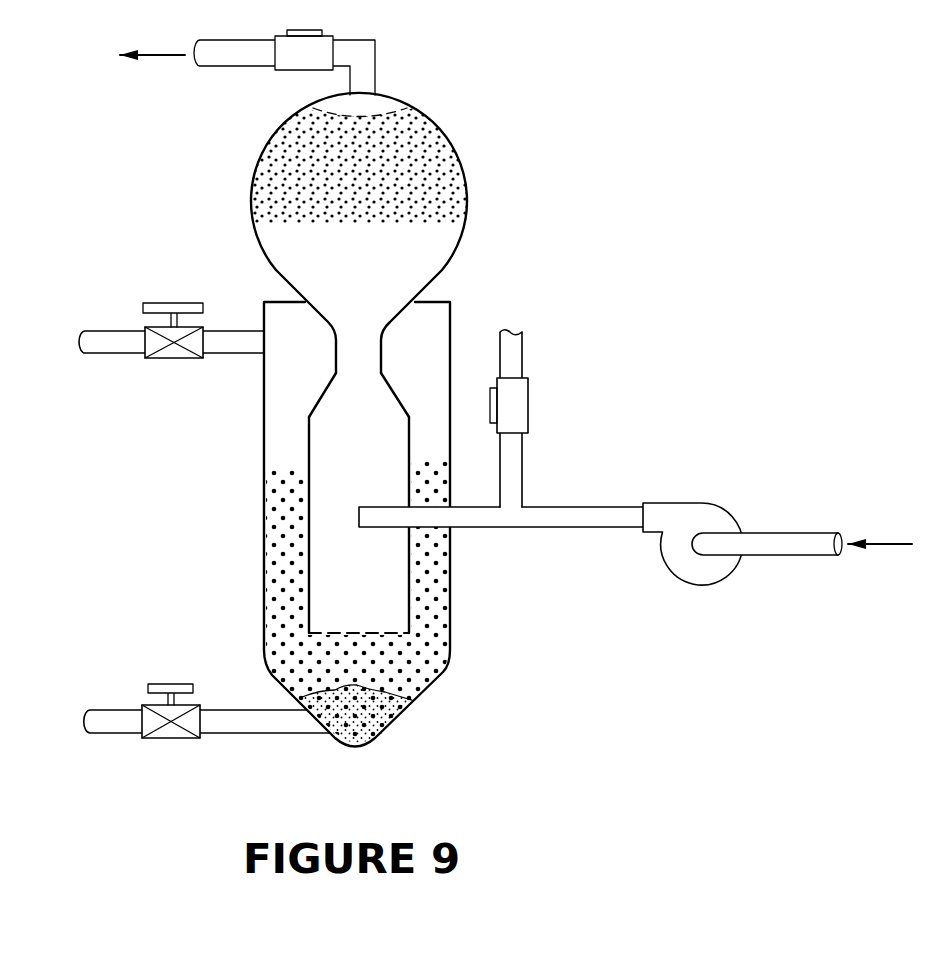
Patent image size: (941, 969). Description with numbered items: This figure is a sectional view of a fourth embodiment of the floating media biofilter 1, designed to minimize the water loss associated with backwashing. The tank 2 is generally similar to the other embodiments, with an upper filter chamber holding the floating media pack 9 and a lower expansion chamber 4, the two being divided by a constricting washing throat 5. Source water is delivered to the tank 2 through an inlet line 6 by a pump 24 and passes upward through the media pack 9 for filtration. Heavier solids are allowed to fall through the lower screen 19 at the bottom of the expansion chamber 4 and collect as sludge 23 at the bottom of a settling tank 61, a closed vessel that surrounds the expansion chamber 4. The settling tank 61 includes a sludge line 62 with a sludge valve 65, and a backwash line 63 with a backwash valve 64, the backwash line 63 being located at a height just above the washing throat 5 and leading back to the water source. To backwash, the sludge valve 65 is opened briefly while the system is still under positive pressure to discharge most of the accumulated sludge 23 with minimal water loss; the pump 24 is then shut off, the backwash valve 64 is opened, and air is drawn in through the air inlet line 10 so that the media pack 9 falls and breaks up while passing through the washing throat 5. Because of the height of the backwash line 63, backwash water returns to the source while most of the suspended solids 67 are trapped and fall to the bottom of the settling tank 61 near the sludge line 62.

The floating media biofilter 1 is at (118, 122).
The tank 2 is at (498, 192).
The media pack 9 is at (418, 167).
The washing throat 5 is at (336, 350).
The suspended solids 67 is at (280, 483).
The expansion chamber 4 is at (303, 564).
The settling tank 61 is at (451, 615).
The lower screen 19 is at (400, 637).
The sludge 23 is at (383, 715).
The backwash line 63 is at (108, 331).
The backwash valve 64 is at (197, 303).
The sludge line 62 is at (260, 733).
The sludge valve 65 is at (165, 738).
The inlet line 6 is at (472, 527).
The air inlet line 10 is at (522, 455).
The pump 24 is at (698, 503).